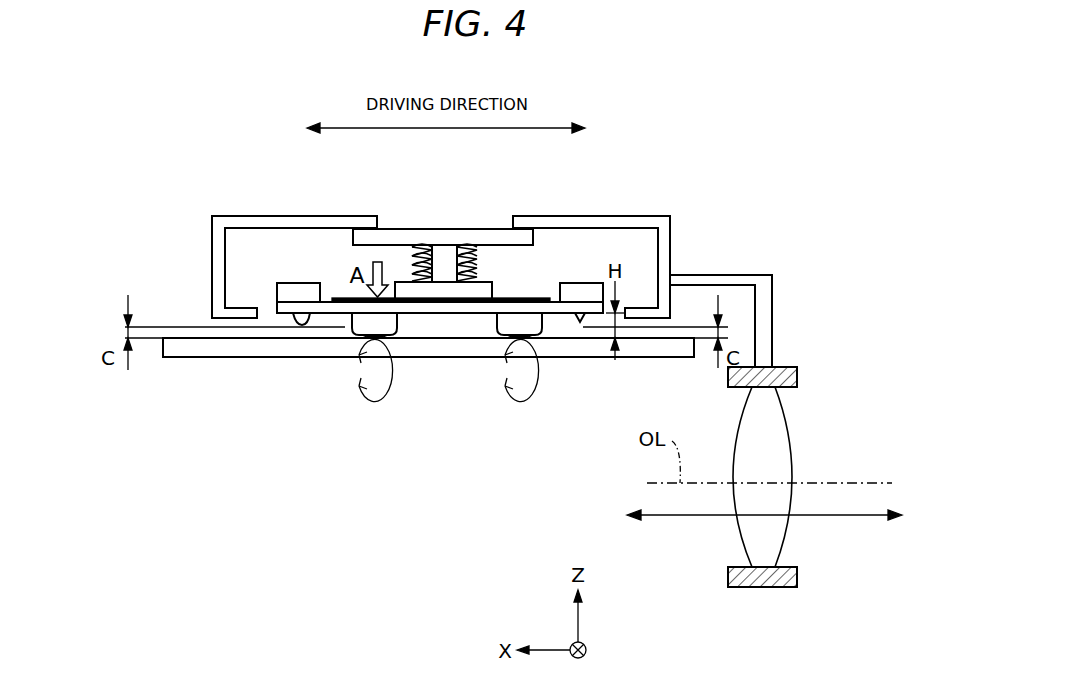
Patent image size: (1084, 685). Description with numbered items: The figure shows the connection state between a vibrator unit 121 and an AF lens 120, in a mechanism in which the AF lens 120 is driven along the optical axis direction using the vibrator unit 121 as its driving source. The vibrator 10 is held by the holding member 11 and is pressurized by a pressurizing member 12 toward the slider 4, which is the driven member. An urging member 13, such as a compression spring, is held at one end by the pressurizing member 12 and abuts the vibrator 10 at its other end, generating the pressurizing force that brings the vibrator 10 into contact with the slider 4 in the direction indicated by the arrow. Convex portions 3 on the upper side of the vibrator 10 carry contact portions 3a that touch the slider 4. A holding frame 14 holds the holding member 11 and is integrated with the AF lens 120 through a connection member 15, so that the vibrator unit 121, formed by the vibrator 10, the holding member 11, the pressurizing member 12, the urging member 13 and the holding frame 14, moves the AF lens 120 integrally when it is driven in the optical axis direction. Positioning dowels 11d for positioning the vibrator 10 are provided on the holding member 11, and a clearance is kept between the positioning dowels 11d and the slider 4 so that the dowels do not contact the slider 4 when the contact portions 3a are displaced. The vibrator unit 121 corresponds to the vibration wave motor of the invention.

The convex portion 3 is at (362, 340).
The contact portion 3a is at (388, 340).
The slider 4 is at (213, 347).
The vibrator 10 is at (277, 306).
The holding member 11 is at (298, 283).
The positioning dowel 11d is at (292, 319).
The pressurizing member 12 is at (422, 230).
The urging member 13 is at (478, 268).
The holding frame 14 is at (277, 216).
The connection member 15 is at (765, 302).
The AF lens 120 is at (785, 430).
The vibrator unit 121 is at (158, 145).